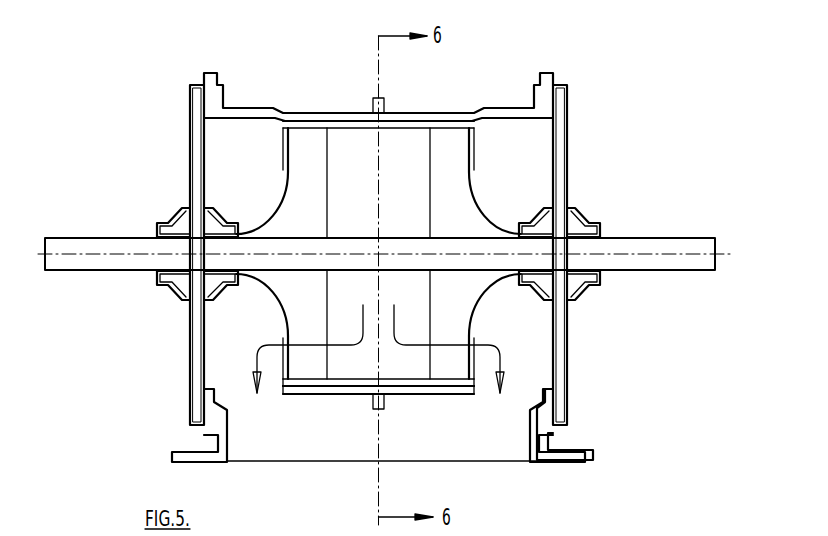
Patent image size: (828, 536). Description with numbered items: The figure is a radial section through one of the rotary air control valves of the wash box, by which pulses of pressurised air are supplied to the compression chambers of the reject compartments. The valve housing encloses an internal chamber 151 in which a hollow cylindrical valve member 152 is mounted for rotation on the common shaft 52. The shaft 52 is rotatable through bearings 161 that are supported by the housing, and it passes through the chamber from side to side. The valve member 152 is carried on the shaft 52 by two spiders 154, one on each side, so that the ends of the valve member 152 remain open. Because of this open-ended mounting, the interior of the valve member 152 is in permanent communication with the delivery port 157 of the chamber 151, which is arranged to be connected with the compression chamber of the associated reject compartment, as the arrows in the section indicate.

The internal chamber 151 is at (256, 130).
The hollow cylindrical valve member 152 is at (345, 143).
The spider 154 is at (290, 203).
The bearing 161 is at (555, 223).
The common shaft 52 is at (633, 262).
The delivery port 157 is at (322, 452).